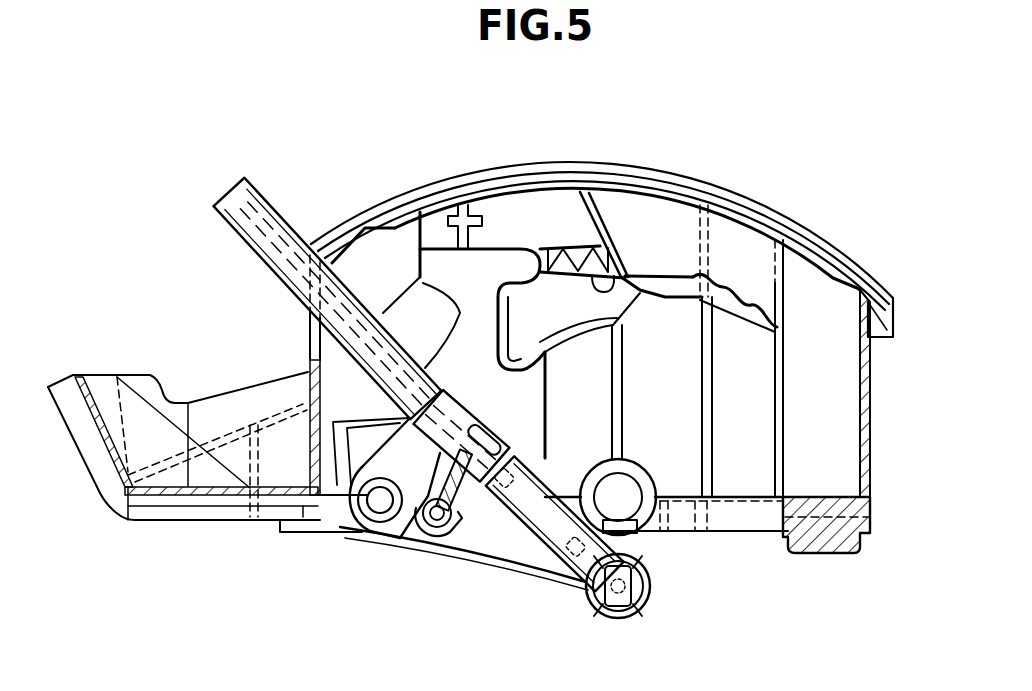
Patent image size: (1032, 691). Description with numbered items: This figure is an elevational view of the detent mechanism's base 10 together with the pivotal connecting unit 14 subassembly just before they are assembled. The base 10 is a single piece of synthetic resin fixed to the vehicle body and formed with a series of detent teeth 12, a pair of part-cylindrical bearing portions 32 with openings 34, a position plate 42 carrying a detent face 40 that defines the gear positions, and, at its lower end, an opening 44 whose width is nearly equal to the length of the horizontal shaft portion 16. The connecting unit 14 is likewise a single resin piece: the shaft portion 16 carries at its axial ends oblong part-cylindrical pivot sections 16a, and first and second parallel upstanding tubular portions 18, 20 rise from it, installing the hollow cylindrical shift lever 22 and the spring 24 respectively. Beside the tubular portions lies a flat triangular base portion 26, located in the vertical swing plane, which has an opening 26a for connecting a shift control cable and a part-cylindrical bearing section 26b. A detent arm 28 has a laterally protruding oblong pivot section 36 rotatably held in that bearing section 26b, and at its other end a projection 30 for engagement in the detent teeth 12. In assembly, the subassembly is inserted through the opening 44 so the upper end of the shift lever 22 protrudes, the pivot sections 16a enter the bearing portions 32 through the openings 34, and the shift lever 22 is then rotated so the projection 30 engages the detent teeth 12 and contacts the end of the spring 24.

The base 10 is at (456, 140).
The detent teeth 12 is at (730, 285).
The pivotal connecting unit 14 is at (360, 542).
The horizontal shaft portion 16 is at (647, 612).
The pivot sections 16a is at (612, 605).
The first tubular portion 18 is at (455, 415).
The second tubular portion 20 is at (527, 530).
The shift lever 22 is at (279, 216).
The spring 24 is at (488, 500).
The base portion 26 is at (450, 520).
The opening 26a is at (353, 521).
The part-cylindrical bearing section 26b is at (420, 542).
The detent arm 28 is at (466, 500).
The projection 30 is at (455, 415).
The bearing portions 32 is at (650, 505).
The openings 34 is at (622, 530).
The pivot section 36 is at (433, 535).
The detent face 40 is at (608, 288).
The position plate 42 is at (551, 240).
The opening 44 is at (760, 522).